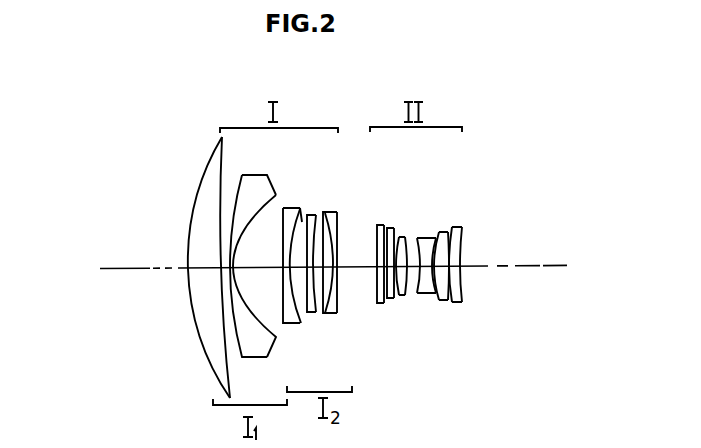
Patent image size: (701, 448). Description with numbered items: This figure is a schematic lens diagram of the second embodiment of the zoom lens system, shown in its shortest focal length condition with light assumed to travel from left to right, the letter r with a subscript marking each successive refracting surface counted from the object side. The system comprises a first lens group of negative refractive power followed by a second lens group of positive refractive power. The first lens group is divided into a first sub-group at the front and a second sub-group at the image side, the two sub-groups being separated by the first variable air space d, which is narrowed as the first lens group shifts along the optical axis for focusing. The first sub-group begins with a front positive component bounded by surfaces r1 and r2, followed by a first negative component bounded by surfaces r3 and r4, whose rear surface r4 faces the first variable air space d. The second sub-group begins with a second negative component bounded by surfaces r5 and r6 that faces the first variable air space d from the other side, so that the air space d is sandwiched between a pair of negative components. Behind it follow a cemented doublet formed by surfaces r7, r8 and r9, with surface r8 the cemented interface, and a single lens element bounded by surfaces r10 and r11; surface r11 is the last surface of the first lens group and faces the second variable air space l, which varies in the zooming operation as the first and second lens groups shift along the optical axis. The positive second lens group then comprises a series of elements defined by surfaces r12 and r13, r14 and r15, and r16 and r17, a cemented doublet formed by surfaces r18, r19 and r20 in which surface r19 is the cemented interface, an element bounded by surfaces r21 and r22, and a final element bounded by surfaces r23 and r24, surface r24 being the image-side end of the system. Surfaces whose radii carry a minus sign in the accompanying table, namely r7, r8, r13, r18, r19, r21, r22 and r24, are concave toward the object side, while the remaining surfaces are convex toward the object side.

The first lens surface r1 is at (209, 168).
The second lens surface r2 is at (228, 383).
The third lens surface r3 is at (240, 174).
The fourth lens surface r4 is at (259, 308).
The fifth lens surface r5 is at (283, 221).
The sixth lens surface r6 is at (303, 325).
The seventh lens surface r7 is at (288, 208).
The eighth lens surface r8 is at (307, 314).
The ninth lens surface r9 is at (318, 213).
The tenth lens surface r10 is at (330, 322).
The eleventh lens surface r11 is at (340, 232).
The twelfth lens surface r12 is at (377, 303).
The thirteenth lens surface r13 is at (388, 225).
The fourteenth lens surface r14 is at (385, 297).
The fifteenth lens surface r15 is at (402, 237).
The sixteenth lens surface r16 is at (412, 290).
The seventeenth lens surface r17 is at (413, 238).
The eighteenth lens surface r18 is at (428, 293).
The nineteenth lens surface r19 is at (438, 233).
The twentieth lens surface r20 is at (448, 293).
The twenty-first lens surface r21 is at (450, 225).
The twenty-second lens surface r22 is at (453, 297).
The twenty-third lens surface r23 is at (455, 228).
The twenty-fourth lens surface r24 is at (467, 288).
The first variable air space d is at (284, 261).
The second variable air space l is at (354, 242).